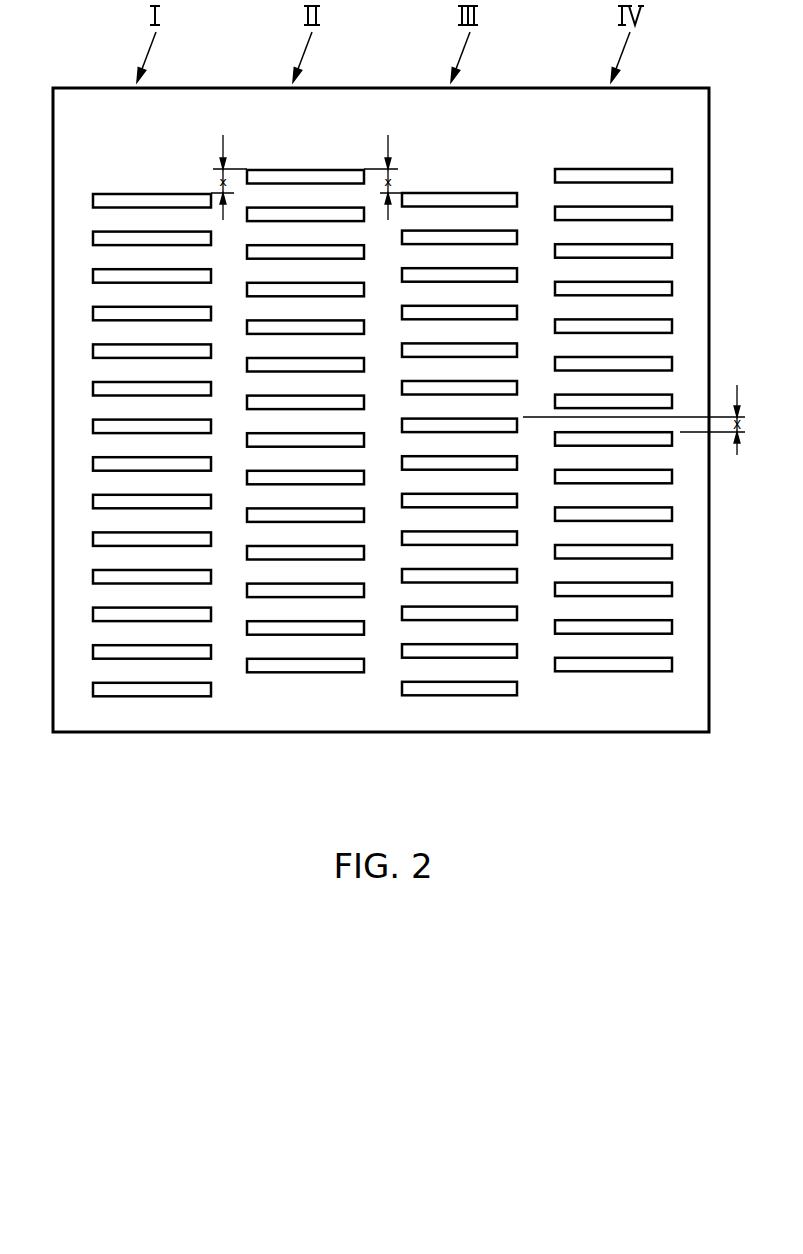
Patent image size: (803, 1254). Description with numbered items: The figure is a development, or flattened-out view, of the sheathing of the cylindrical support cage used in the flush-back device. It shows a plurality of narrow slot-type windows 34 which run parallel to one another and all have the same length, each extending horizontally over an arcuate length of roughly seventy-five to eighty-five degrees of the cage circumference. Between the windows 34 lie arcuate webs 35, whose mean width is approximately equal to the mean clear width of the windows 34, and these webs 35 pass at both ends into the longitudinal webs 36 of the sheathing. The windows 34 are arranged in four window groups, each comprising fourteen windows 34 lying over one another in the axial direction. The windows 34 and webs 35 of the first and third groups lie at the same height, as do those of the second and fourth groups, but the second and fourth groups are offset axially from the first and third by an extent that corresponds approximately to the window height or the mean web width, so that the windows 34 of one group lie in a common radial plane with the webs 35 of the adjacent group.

The slot-type window 34 is at (107, 200).
The arcuate web 35 is at (100, 370).
The longitudinal web 36 is at (222, 688).